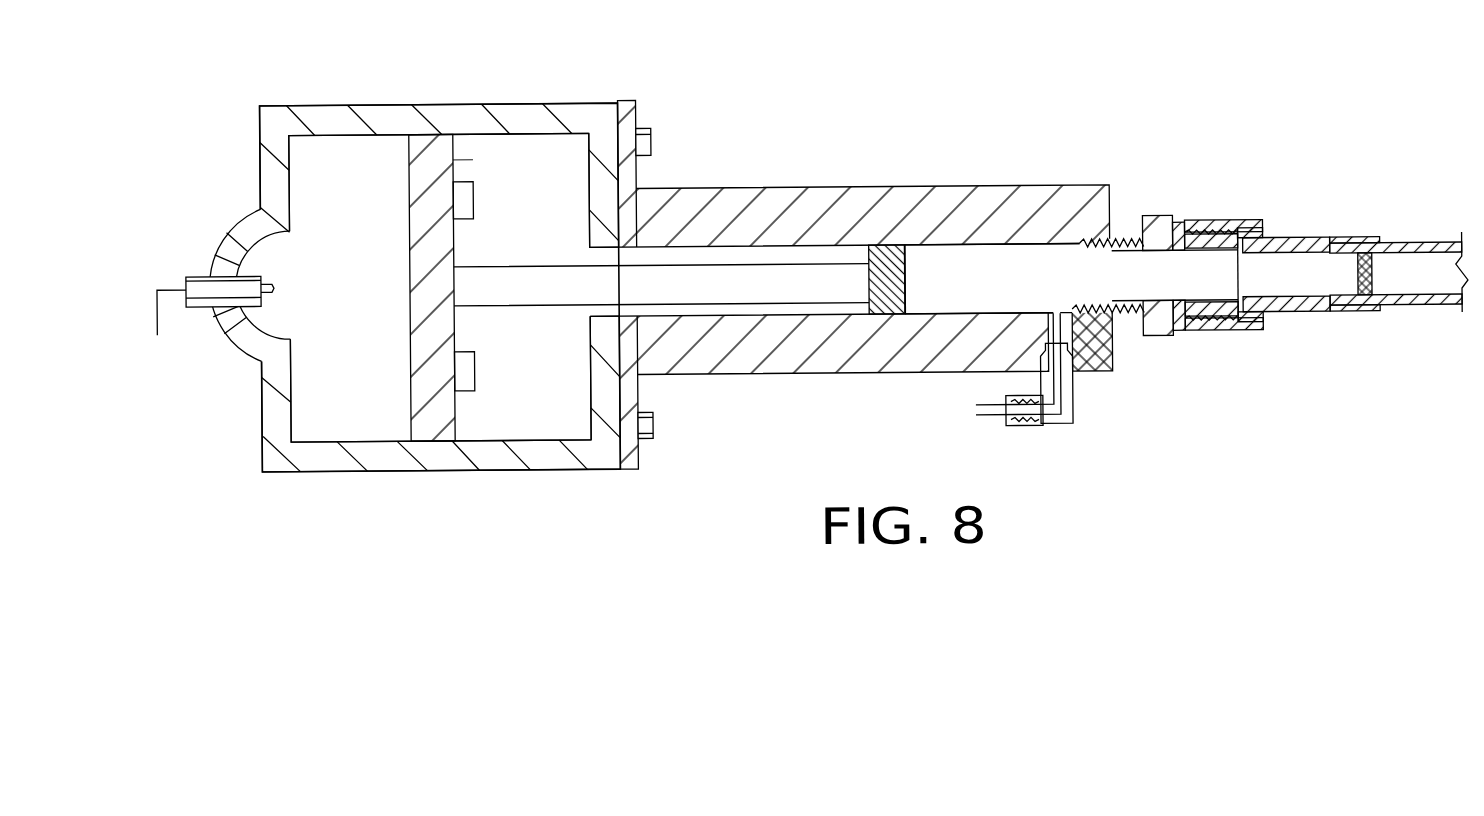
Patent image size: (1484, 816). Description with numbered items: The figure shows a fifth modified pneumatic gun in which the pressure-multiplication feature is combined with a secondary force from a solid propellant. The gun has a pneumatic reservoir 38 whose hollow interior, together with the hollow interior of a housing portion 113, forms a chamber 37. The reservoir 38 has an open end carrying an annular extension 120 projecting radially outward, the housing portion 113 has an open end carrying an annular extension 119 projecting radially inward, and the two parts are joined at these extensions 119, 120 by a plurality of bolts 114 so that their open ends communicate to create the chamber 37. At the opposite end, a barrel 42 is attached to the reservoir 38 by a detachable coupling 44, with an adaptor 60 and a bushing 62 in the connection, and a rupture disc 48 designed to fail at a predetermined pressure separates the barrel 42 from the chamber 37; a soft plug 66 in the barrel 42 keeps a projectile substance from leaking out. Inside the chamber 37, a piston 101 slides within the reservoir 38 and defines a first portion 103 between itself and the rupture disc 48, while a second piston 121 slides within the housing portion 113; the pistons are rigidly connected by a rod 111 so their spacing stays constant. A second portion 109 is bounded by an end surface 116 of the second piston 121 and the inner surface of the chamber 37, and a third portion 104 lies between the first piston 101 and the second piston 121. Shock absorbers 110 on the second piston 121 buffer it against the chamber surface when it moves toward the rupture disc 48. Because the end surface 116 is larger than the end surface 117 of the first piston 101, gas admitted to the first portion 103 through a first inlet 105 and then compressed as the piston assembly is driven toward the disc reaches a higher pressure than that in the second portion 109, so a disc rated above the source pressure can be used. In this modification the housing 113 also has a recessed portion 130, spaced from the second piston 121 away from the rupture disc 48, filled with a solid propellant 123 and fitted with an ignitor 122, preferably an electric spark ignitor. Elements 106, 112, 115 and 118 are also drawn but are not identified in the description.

The chamber 37 is at (804, 311).
The pneumatic reservoir 38 is at (766, 198).
The barrel 42 is at (1393, 248).
The detachable coupling 44 is at (1210, 334).
The rupture disc 48 is at (1268, 313).
The adaptor 60 is at (1157, 337).
The bushing 62 is at (1280, 240).
The soft plug 66 is at (1360, 257).
The piston 101 is at (888, 247).
The first portion 103 is at (1008, 270).
The third portion 104 is at (553, 401).
The first inlet 105 is at (1056, 403).
The threaded end 106 is at (1081, 316).
The second portion 109 is at (340, 412).
The shock absorbers 110 is at (471, 180).
The rod 111 is at (670, 285).
The end wall 112 is at (587, 187).
The housing portion 113 is at (336, 116).
The bolts 114 is at (651, 130).
The seal lip 115 is at (464, 158).
The end surface 116 is at (408, 257).
The end surface 117 is at (907, 305).
The rod seal 118 is at (873, 313).
The annular extension 119 is at (603, 137).
The annular extension 120 is at (626, 120).
The second piston 121 is at (433, 160).
The ignitor 122 is at (202, 289).
The solid propellant 123 is at (250, 216).
The recessed portion 130 is at (218, 239).